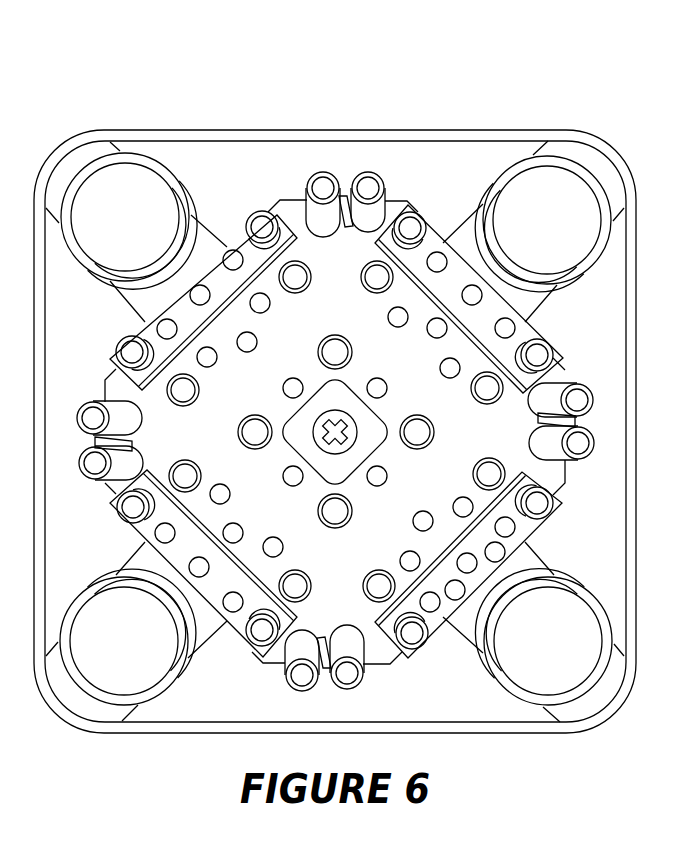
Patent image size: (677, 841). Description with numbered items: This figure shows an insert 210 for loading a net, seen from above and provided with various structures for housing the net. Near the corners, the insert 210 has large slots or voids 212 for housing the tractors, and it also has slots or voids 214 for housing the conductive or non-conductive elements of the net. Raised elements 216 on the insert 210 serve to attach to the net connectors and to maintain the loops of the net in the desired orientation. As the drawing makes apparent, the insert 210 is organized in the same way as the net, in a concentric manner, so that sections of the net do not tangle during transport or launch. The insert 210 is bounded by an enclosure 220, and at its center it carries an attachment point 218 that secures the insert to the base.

The insert 210 is at (130, 85).
The large slots or voids 212 is at (588, 259).
The slots or voids 214 is at (439, 250).
The raised elements 216 is at (297, 262).
The attachment point 218 is at (336, 427).
The enclosure 220 is at (345, 129).